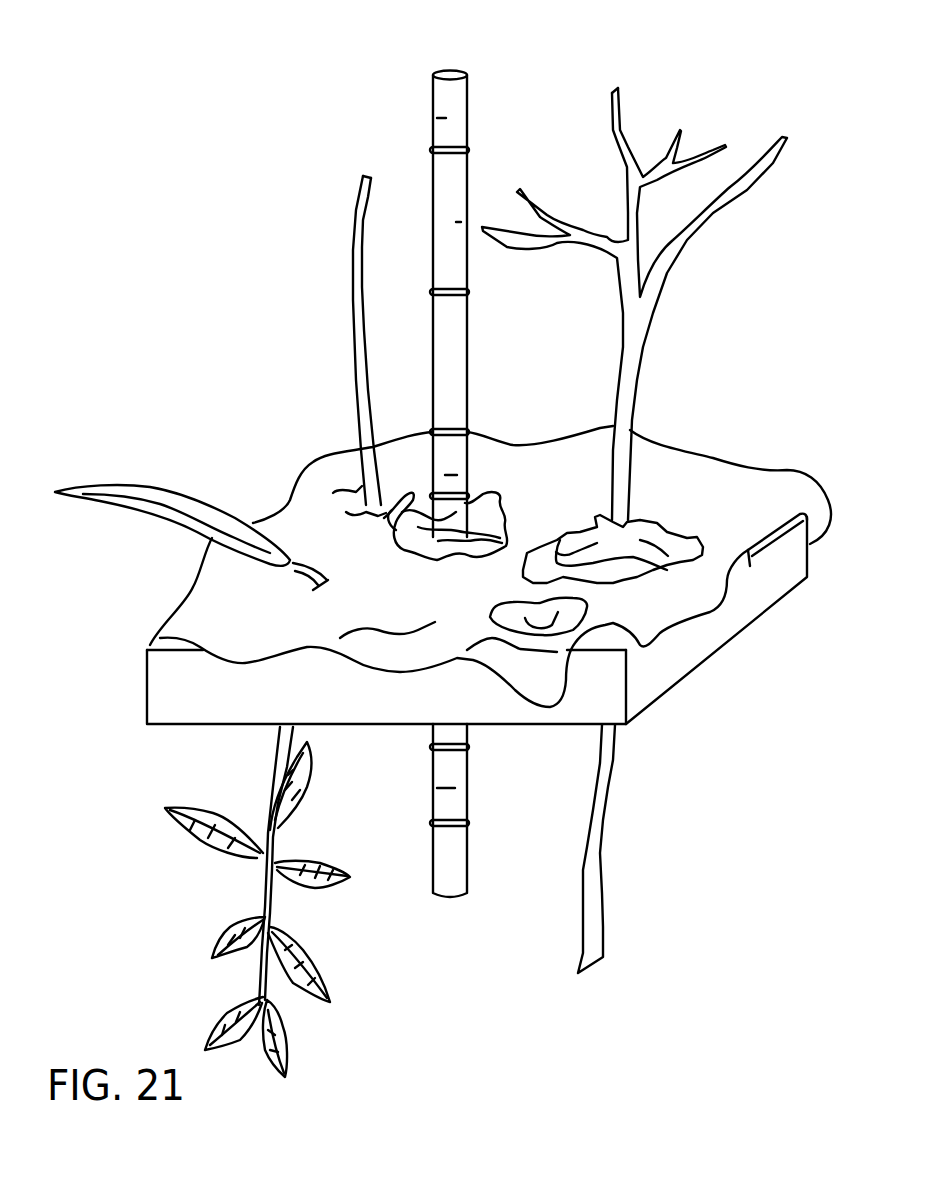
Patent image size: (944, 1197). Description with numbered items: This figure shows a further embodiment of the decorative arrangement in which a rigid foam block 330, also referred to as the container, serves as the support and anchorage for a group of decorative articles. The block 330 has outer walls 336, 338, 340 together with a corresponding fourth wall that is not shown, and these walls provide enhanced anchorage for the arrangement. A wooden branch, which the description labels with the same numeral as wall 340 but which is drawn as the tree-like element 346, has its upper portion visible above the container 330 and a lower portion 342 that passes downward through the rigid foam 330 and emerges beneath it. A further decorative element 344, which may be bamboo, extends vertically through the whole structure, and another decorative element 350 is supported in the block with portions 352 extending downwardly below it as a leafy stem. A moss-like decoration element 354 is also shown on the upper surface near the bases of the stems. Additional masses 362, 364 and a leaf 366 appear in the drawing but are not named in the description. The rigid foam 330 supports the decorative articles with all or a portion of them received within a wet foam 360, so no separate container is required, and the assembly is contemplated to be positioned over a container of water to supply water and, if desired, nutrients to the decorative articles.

The rigid foam block 330 is at (434, 626).
The outer wall 336 is at (190, 712).
The outer wall 338 is at (645, 697).
The outer wall 340 is at (446, 535).
The lower portion 342 is at (600, 930).
The decorative element 344 is at (467, 862).
The tree cutting 346 is at (648, 402).
The decorative element 350 is at (354, 328).
The portions 352 is at (312, 965).
The moss-like decoration element 354 is at (490, 512).
The wet foam 360 is at (647, 620).
The root mass 362 is at (673, 562).
The root mass 364 is at (522, 620).
The leaf 366 is at (177, 492).